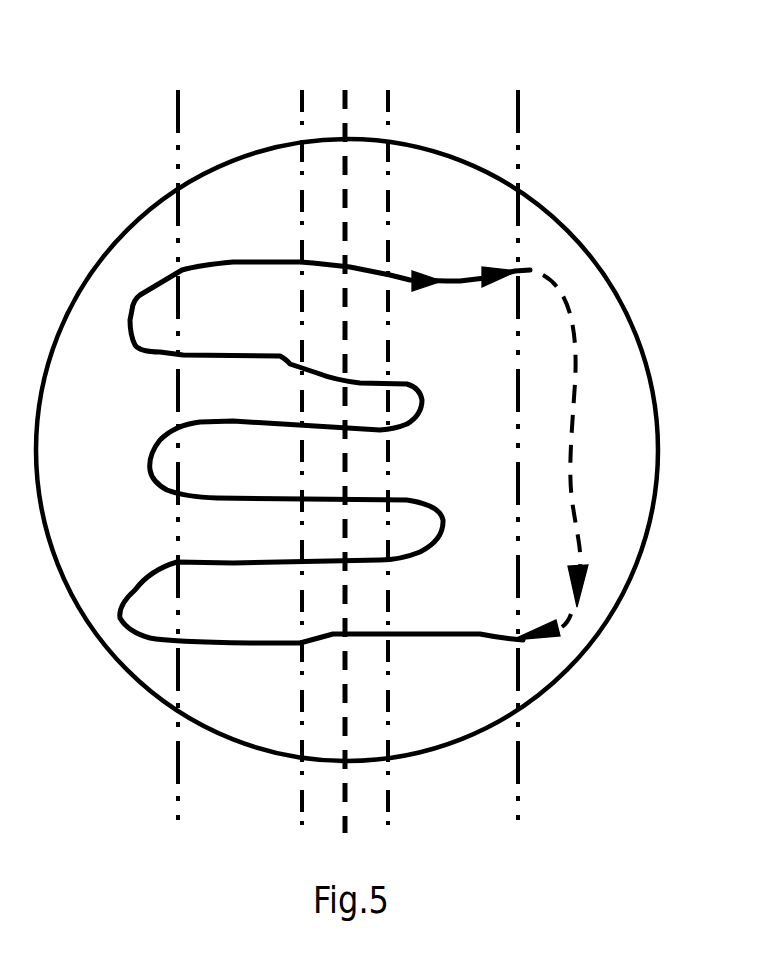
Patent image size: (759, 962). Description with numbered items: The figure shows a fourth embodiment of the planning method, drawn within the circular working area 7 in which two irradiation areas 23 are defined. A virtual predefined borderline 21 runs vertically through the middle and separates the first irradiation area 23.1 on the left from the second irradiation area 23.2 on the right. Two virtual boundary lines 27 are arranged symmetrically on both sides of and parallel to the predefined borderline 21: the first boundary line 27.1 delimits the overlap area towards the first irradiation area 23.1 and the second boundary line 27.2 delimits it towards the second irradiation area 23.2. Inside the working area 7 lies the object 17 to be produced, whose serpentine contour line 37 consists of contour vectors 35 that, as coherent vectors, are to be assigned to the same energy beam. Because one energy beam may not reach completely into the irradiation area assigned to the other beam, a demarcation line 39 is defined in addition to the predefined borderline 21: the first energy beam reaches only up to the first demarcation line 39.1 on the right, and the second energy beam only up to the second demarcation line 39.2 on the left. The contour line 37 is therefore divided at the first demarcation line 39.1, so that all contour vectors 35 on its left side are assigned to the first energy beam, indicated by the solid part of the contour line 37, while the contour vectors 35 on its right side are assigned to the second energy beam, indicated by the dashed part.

The working area 7 is at (655, 386).
The object 17 is at (580, 505).
The predefined borderline 21 is at (348, 90).
The irradiation areas 23 is at (274, 390).
The first irradiation area 23.1 is at (131, 449).
The second irradiation area 23.2 is at (494, 357).
The boundary lines 27 is at (344, 434).
The first boundary line 27.1 is at (300, 102).
The second boundary line 27.2 is at (390, 102).
The contour vectors 35 is at (462, 278).
The contour line 37 is at (423, 645).
The demarcation line 39 is at (349, 461).
The first demarcation line 39.1 is at (520, 101).
The second demarcation line 39.2 is at (176, 103).